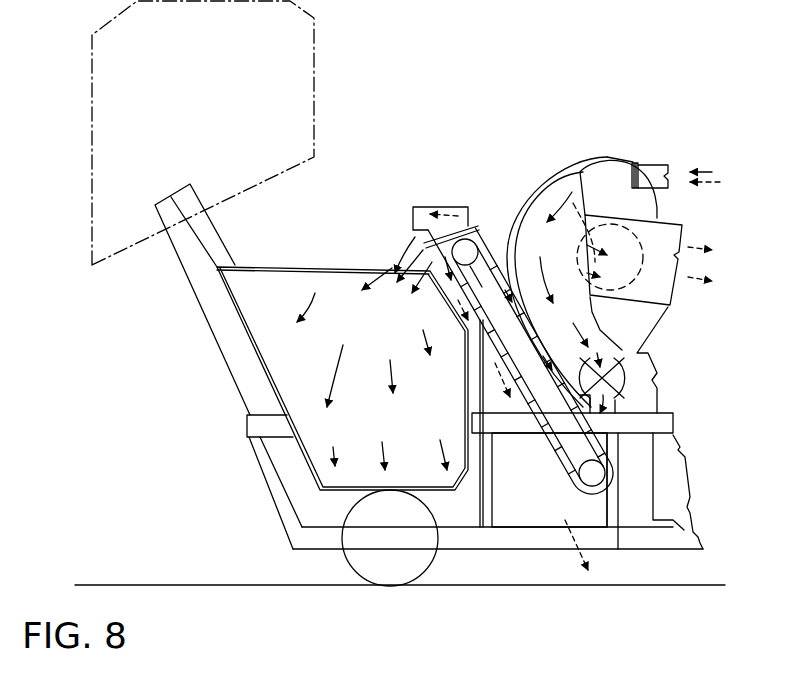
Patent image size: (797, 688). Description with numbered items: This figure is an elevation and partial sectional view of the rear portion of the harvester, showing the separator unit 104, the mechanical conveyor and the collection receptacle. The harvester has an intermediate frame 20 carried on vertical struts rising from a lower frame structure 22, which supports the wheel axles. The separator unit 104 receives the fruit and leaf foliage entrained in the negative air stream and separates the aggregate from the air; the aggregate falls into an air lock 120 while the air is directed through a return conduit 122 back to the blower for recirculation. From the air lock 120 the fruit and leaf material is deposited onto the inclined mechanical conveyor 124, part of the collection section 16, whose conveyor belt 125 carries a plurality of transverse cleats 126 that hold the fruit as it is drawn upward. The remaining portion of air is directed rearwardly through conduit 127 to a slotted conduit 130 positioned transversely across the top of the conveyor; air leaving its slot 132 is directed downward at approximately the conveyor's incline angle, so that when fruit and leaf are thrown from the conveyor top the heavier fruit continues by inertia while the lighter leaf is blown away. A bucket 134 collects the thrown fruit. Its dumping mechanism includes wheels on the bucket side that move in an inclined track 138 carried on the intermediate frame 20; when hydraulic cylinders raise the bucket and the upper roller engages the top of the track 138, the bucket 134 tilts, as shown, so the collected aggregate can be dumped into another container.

The collection section 16 is at (284, 236).
The intermediate frame 20 is at (528, 423).
The lower frame structure 22 is at (552, 538).
The separator unit 104 is at (612, 180).
The air lock 120 is at (617, 371).
The return conduit 122 is at (652, 262).
The inclined mechanical conveyor 124 is at (470, 240).
The conveyor belt 125 is at (552, 444).
The transverse cleats 126 is at (477, 270).
The conduit 127 is at (657, 405).
The slotted conduit 130 is at (458, 197).
The slot 132 is at (423, 231).
The bucket 134 is at (262, 366).
The inclined track 138 is at (212, 240).